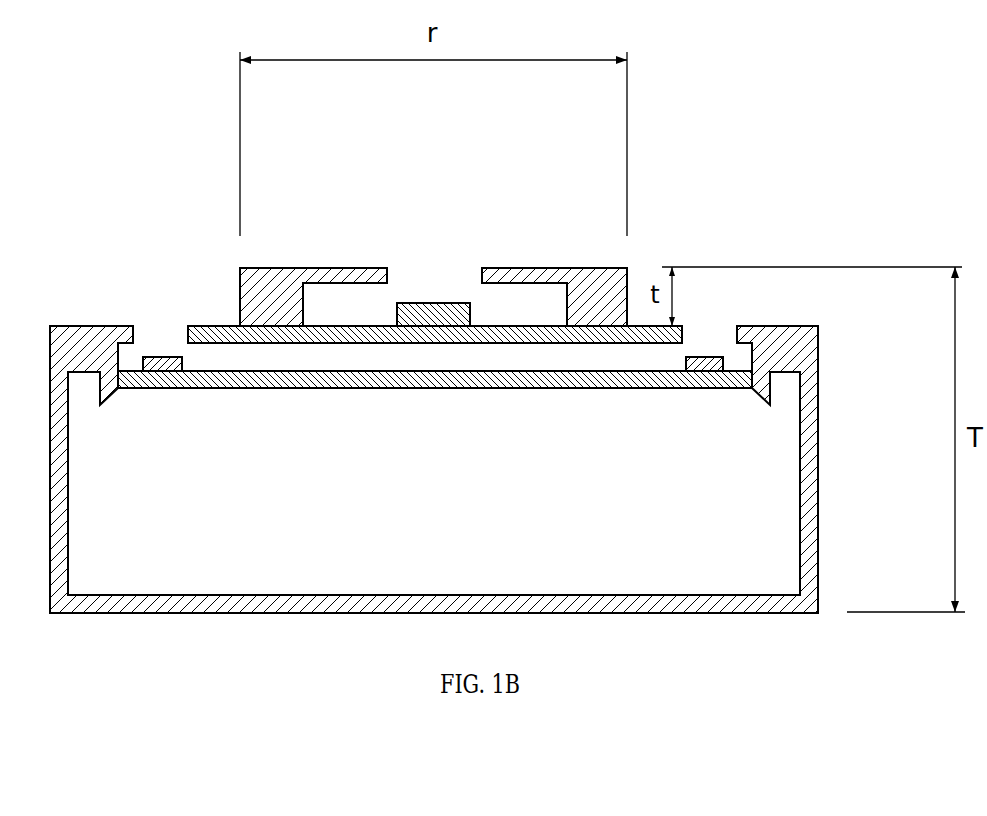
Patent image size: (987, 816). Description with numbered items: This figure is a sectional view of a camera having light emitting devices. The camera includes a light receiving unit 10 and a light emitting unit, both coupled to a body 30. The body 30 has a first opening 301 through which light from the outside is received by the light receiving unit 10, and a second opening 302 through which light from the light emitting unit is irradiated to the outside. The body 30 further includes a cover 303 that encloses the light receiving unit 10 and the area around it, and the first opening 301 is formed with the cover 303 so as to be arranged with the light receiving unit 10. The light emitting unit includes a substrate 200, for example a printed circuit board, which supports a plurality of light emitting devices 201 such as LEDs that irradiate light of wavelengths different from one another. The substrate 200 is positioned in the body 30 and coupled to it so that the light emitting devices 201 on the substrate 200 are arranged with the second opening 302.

The light receiving unit 10 is at (450, 303).
The body 30 is at (806, 348).
The substrate 200 is at (322, 392).
The light emitting devices 201 is at (155, 357).
The first opening 301 is at (420, 272).
The second opening 302 is at (175, 333).
The cover 303 is at (343, 267).